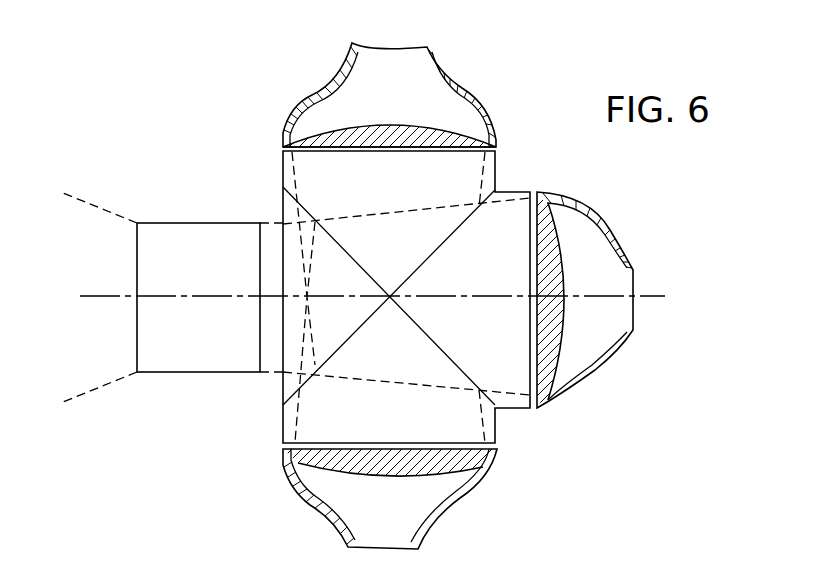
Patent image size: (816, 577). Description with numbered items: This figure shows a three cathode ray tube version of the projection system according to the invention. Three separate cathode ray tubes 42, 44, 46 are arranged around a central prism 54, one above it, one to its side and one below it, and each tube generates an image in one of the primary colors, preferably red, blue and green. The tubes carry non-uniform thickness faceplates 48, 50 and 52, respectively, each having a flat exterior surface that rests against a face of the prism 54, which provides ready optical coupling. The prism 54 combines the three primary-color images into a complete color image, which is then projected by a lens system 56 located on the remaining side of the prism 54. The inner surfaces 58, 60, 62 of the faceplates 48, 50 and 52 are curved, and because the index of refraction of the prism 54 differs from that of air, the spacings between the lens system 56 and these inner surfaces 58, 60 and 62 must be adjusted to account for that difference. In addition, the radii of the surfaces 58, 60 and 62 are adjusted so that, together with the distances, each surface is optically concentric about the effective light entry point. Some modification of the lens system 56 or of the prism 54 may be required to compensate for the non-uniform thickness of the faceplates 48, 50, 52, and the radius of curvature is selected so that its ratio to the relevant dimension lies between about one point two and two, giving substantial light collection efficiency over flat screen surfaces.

The cathode ray tube 42 is at (312, 90).
The cathode ray tube 44 is at (578, 400).
The cathode ray tube 46 is at (462, 508).
The faceplate 48 is at (365, 132).
The faceplate 50 is at (550, 322).
The faceplate 52 is at (382, 460).
The prism 54 is at (433, 252).
The lens system 56 is at (219, 223).
The inner surface 58 is at (392, 128).
The inner surface 60 is at (562, 256).
The inner surface 62 is at (437, 475).